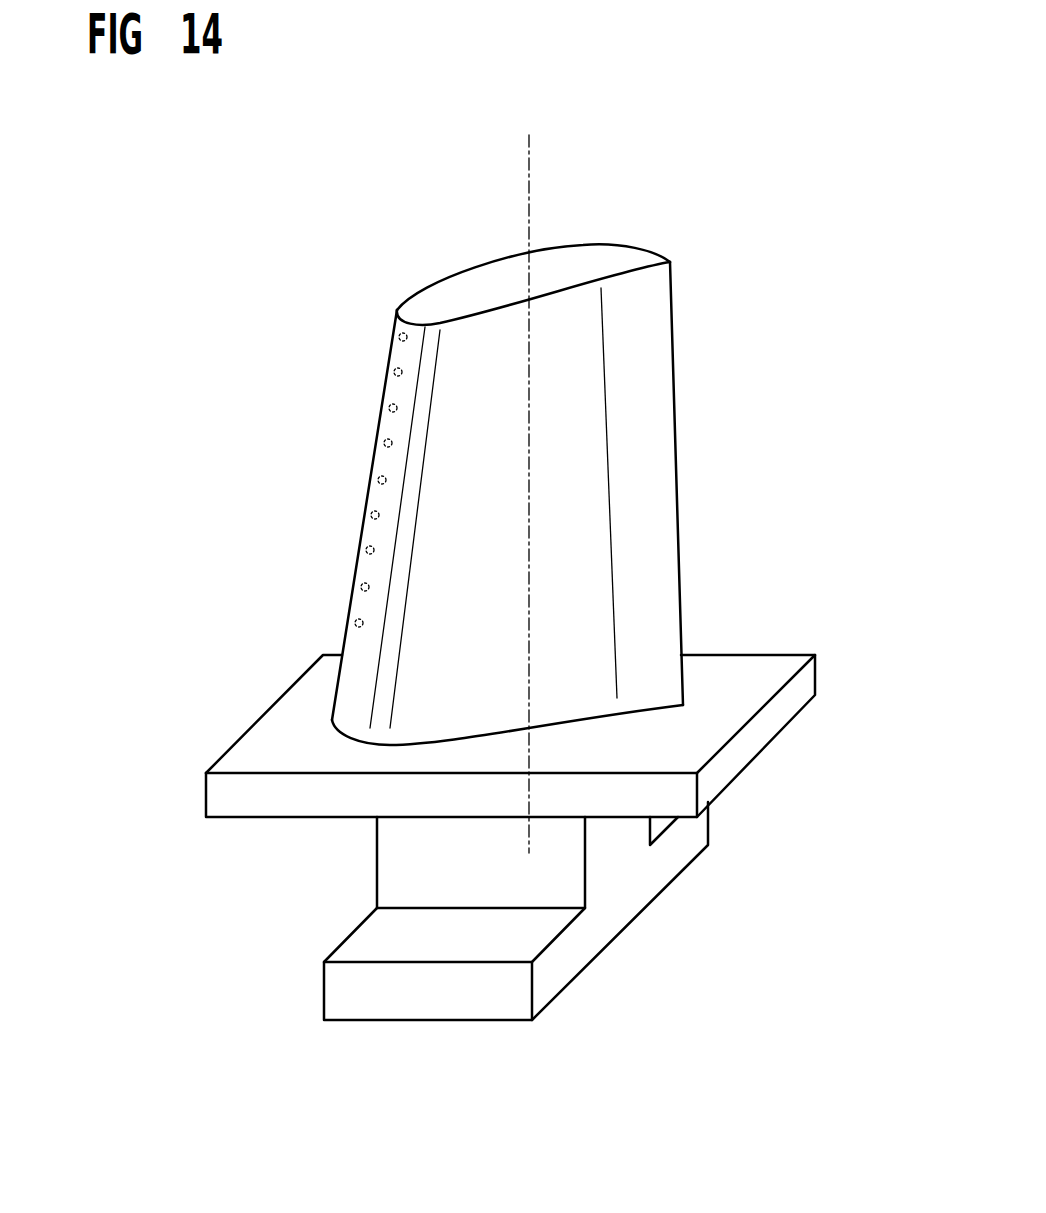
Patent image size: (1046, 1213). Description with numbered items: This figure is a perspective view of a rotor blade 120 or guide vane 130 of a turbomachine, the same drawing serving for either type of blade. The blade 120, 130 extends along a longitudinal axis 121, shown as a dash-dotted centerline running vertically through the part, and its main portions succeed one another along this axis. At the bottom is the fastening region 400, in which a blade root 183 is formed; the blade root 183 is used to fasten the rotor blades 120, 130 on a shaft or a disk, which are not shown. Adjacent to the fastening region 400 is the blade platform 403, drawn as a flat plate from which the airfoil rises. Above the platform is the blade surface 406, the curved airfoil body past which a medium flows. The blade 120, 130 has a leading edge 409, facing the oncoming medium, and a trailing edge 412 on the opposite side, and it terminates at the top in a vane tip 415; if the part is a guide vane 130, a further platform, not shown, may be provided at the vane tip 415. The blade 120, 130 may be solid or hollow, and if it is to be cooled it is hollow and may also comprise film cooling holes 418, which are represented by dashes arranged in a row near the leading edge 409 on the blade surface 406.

The rotor blade 120 is at (238, 505).
The guide vane 130 is at (561, 577).
The longitudinal axis 121 is at (529, 183).
The trailing edge 412 is at (700, 445).
The vane tip 415 is at (426, 302).
The leading edge 409 is at (364, 411).
The film cooling holes 418 is at (399, 338).
The blade surface 406 is at (352, 702).
The blade platform 403 is at (777, 708).
The fastening region 400 is at (657, 885).
The blade root 183 is at (365, 942).